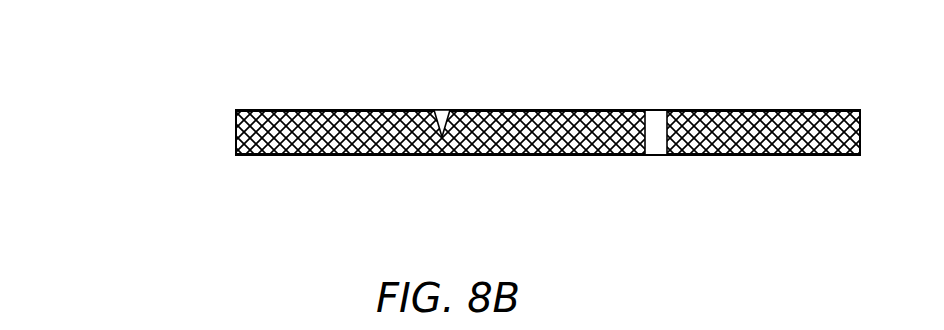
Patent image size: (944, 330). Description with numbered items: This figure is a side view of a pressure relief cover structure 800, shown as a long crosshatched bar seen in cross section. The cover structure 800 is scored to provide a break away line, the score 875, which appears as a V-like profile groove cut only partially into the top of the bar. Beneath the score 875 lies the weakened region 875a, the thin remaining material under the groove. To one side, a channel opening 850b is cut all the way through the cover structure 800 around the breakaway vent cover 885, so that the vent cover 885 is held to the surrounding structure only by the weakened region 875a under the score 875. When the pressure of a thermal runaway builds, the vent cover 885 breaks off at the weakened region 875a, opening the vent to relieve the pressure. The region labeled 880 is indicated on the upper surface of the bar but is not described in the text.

The pressure relief cover structure 800 is at (222, 82).
The outer surface of bar 880 is at (298, 109).
The score 875 is at (441, 109).
The weakened region 875a is at (433, 156).
The vent cover 885 is at (540, 110).
The channel opening 850b is at (656, 122).